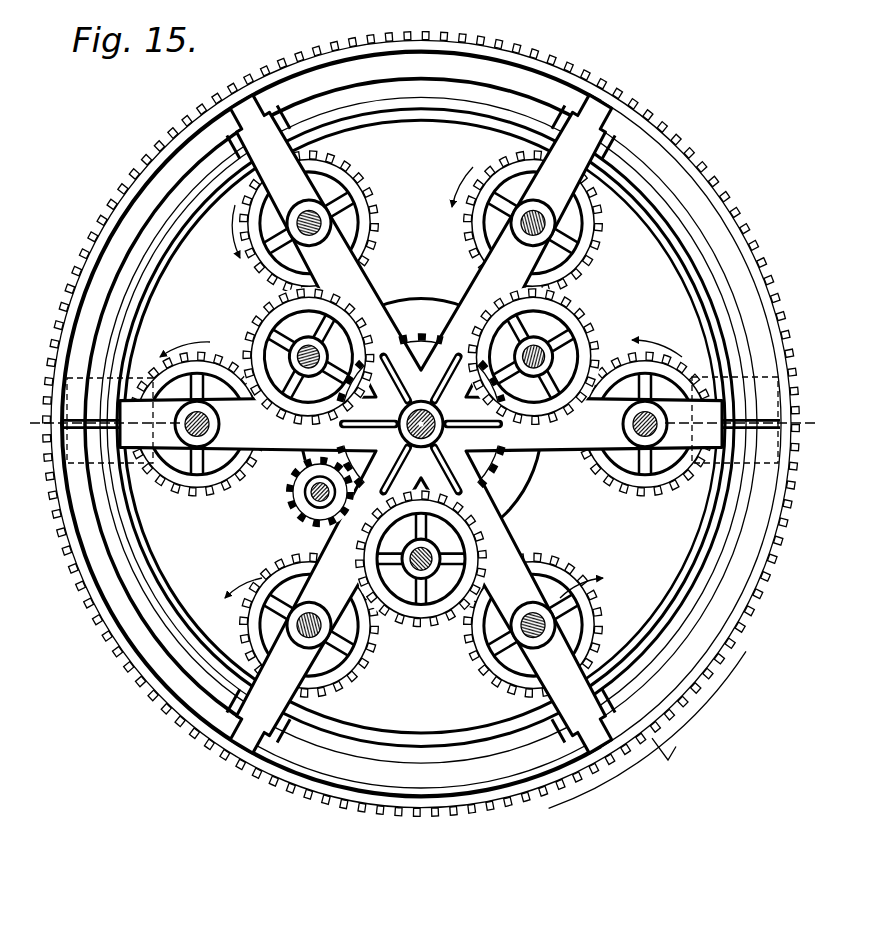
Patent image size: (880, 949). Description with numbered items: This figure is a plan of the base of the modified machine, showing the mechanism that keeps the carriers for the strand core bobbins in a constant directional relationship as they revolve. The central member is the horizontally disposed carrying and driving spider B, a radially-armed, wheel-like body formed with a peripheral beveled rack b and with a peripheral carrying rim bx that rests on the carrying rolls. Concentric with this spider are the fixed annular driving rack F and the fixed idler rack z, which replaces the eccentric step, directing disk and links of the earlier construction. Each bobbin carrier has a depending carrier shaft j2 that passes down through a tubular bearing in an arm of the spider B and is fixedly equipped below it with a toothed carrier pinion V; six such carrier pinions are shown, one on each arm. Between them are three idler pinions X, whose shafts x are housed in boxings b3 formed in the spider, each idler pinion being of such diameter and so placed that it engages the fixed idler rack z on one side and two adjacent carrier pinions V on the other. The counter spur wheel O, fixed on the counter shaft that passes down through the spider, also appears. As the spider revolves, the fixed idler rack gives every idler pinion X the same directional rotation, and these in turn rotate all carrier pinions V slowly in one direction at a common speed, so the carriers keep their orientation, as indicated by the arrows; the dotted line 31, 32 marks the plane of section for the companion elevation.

The peripheral beveled rack b is at (419, 820).
The peripheral carrying rim bx is at (420, 753).
The carrying and driving spider B is at (484, 560).
The carrier pinion V is at (357, 186).
The carrier shaft j2 is at (331, 222).
The boxing b3 is at (311, 346).
The idler pinion shaft x is at (299, 357).
The fixed idler rack z is at (418, 348).
The fixed annular driving rack F is at (486, 471).
The counter spur wheel O is at (303, 500).
The idler pinion X is at (282, 318).
The section line end 31 is at (27, 352).
The section line end 32 is at (815, 332).